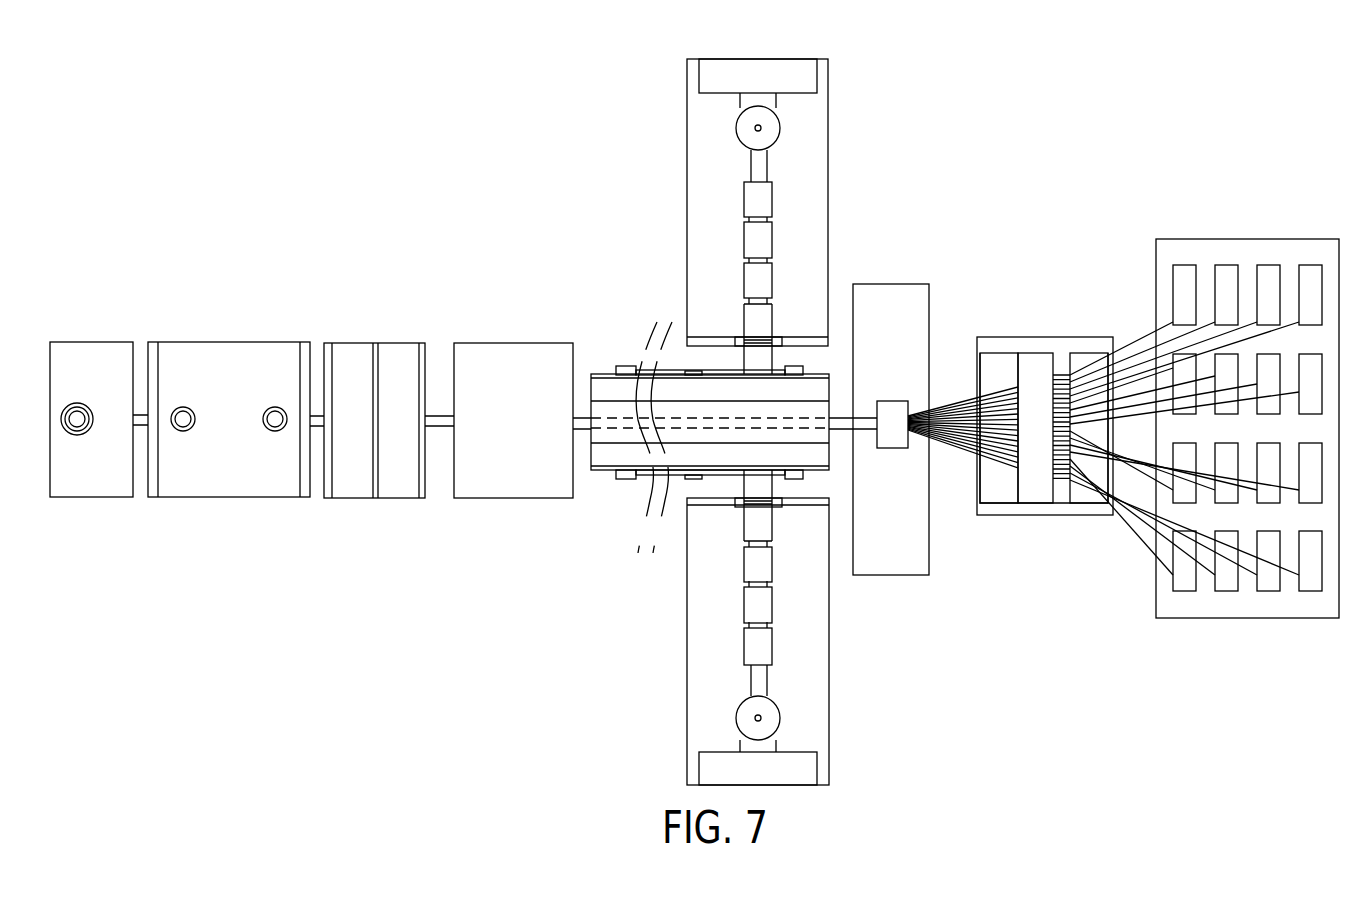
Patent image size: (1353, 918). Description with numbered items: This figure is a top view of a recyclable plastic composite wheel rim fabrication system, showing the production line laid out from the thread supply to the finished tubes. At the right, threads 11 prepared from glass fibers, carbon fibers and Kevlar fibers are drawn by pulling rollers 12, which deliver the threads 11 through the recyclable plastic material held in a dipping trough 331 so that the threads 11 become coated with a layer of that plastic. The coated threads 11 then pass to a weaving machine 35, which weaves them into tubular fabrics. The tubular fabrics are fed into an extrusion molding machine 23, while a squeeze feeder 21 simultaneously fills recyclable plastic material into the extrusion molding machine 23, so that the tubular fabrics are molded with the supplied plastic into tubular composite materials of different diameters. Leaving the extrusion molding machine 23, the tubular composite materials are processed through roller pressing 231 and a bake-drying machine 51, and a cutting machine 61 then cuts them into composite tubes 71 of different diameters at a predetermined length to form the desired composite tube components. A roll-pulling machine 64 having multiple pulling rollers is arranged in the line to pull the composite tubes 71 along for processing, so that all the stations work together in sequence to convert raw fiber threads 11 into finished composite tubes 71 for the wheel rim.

The cutting machine 61 is at (68, 365).
The roll-pulling machine 64 is at (220, 373).
The composite tubes 71 is at (388, 417).
The bake-drying machine 51 is at (496, 363).
The roller pressing 231 is at (617, 415).
The extrusion molding machine 23 is at (779, 413).
The squeeze feeder 21 is at (822, 183).
The weaving machine 35 is at (886, 292).
The dipping trough 331 is at (998, 508).
The pulling rollers 12 is at (1080, 355).
The threads 11 is at (1132, 337).